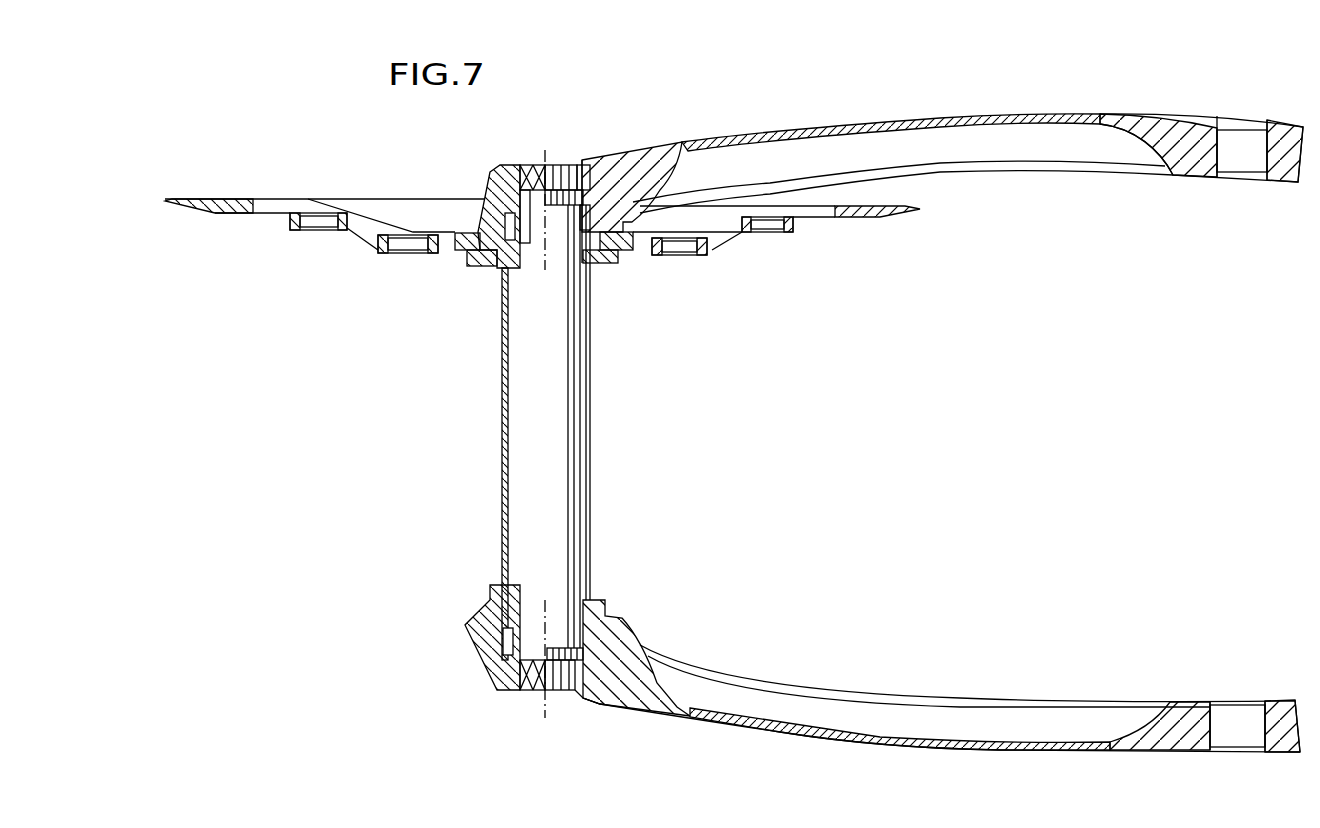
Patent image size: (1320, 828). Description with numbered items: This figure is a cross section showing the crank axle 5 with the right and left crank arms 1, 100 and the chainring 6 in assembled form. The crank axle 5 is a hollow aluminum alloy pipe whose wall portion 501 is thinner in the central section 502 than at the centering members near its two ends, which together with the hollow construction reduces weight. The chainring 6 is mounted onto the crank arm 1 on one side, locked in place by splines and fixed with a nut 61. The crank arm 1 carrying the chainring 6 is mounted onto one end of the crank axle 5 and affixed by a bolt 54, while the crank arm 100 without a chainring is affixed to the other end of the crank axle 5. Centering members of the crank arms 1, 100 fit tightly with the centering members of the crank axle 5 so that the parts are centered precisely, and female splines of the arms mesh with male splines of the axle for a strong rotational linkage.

The crank arm 1 is at (988, 112).
The crank arm 100 is at (849, 682).
The chainring 6 is at (247, 198).
The crank axle 5 is at (475, 432).
The wall portion 501 is at (500, 380).
The central section 502 is at (492, 461).
The nut 61 is at (478, 265).
The bolt 54 is at (571, 167).